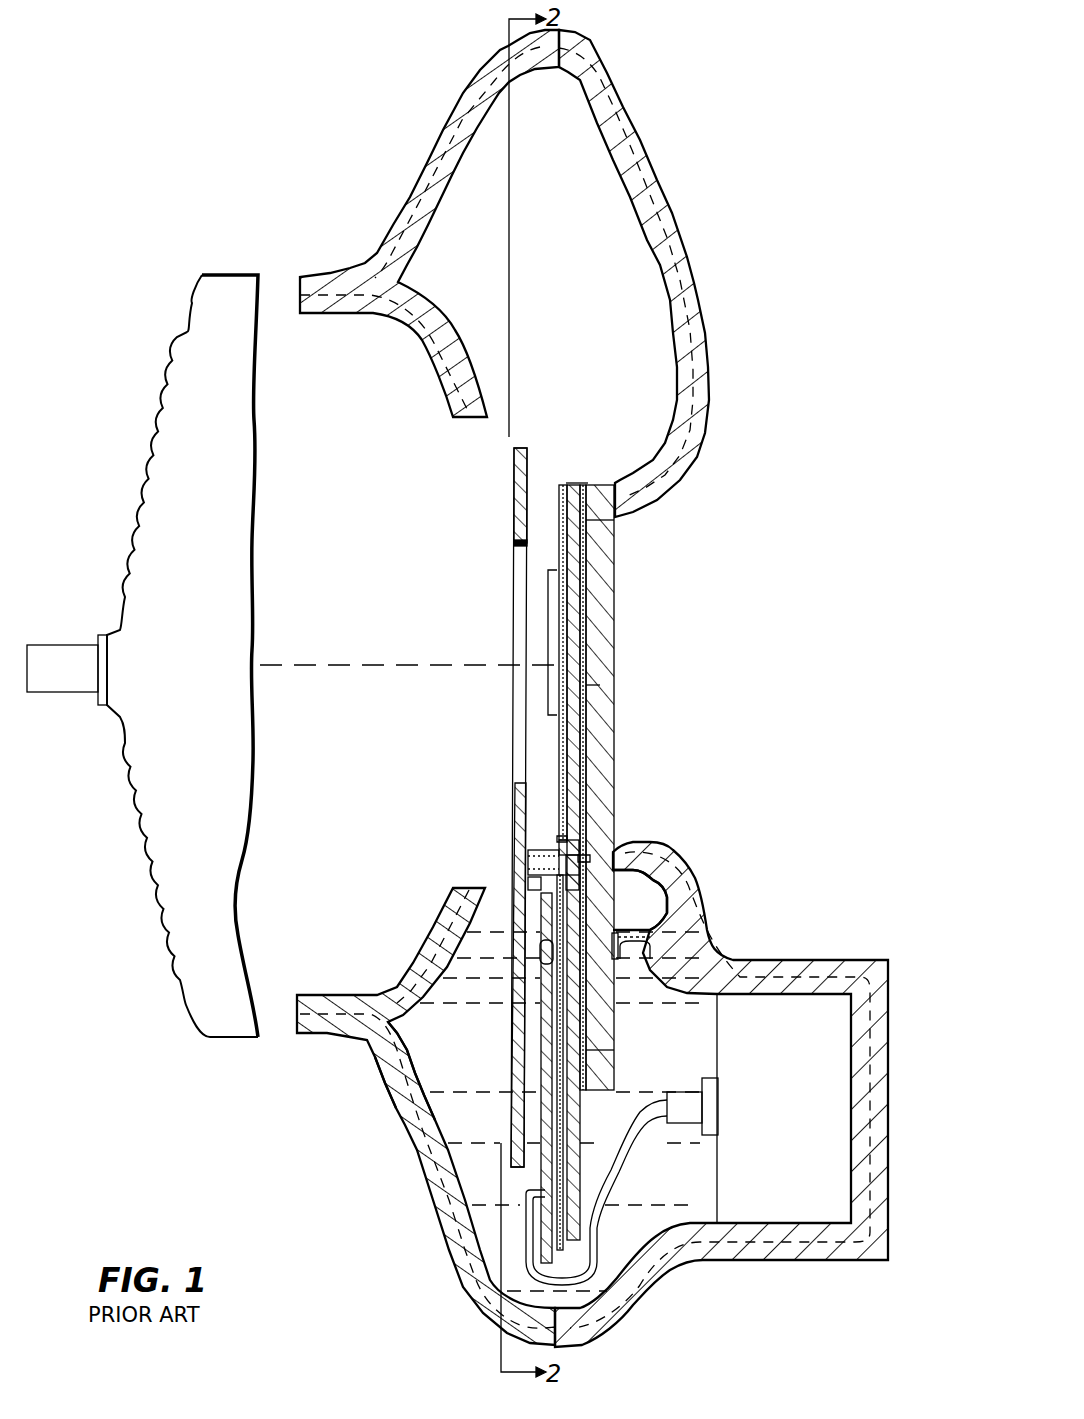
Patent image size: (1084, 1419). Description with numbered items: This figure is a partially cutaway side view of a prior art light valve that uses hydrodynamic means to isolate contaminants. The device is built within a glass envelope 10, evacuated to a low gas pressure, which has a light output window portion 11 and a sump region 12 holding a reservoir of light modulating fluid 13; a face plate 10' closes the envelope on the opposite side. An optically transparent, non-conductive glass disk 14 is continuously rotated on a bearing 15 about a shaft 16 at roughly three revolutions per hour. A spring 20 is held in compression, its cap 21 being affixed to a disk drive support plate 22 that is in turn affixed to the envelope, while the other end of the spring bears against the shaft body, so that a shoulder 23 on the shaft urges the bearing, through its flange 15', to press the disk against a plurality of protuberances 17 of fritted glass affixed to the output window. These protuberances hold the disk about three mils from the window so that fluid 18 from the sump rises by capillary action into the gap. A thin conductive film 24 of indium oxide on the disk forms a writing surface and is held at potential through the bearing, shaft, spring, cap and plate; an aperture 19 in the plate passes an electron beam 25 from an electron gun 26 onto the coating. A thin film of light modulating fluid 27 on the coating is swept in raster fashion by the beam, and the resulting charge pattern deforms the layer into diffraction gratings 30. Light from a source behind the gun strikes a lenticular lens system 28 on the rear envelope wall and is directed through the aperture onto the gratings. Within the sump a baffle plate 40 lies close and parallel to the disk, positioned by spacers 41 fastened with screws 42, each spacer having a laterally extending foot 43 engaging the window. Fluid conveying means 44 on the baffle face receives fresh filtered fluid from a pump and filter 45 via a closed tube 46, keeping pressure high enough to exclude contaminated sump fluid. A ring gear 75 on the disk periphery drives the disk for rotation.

The envelope 10 is at (380, 687).
The face plate 10' is at (721, 688).
The light output window portion 11 is at (600, 620).
The sump region 12 is at (460, 1180).
The light modulating fluid 13 is at (411, 1045).
The optically transparent disk 14 is at (580, 568).
The bearing 15 is at (619, 819).
The flange 15' is at (546, 809).
The shaft 16 is at (620, 865).
The protuberances 17 is at (592, 528).
The fluid 18 is at (585, 685).
The aperture 19 is at (520, 555).
The spring 20 is at (532, 853).
The cap 21 is at (528, 887).
The disk drive support plate 22 is at (520, 450).
The shoulder 23 is at (582, 875).
The thin film 24 is at (588, 485).
The electron beam 25 is at (370, 660).
The electron gun 26 is at (78, 655).
The thin film of light modulating fluid 27 is at (561, 500).
The lenticular lens system 28 is at (133, 820).
The diffraction gratings 30 is at (548, 640).
The baffle plate 40 is at (485, 1050).
The spacers 41 is at (545, 985).
The screws 42 is at (540, 947).
The laterally extending foot 43 is at (648, 960).
The fluid conveying means 44 is at (555, 1112).
The pump and filter 45 is at (792, 1114).
The closed tube 46 is at (630, 1138).
The ring gear 75 is at (578, 484).